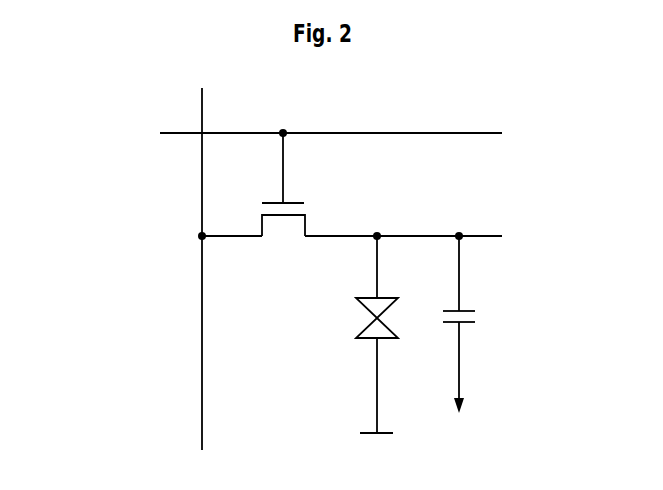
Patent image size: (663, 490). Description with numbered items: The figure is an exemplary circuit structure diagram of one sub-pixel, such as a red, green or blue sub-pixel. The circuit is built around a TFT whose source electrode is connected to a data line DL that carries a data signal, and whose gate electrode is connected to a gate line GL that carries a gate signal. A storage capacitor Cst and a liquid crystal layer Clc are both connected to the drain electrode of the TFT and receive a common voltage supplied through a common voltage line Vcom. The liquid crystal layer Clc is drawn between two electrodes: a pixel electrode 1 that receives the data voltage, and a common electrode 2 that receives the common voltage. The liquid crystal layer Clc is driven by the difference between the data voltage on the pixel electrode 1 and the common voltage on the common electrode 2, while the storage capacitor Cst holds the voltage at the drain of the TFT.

The pixel electrode 1 is at (366, 297).
The common electrode 2 is at (367, 340).
The data line DL is at (202, 259).
The gate line GL is at (317, 134).
The element TFT is at (306, 184).
The liquid crystal layer Clc is at (359, 318).
The storage capacitor Cst is at (480, 324).
The common voltage line Vcom is at (374, 448).